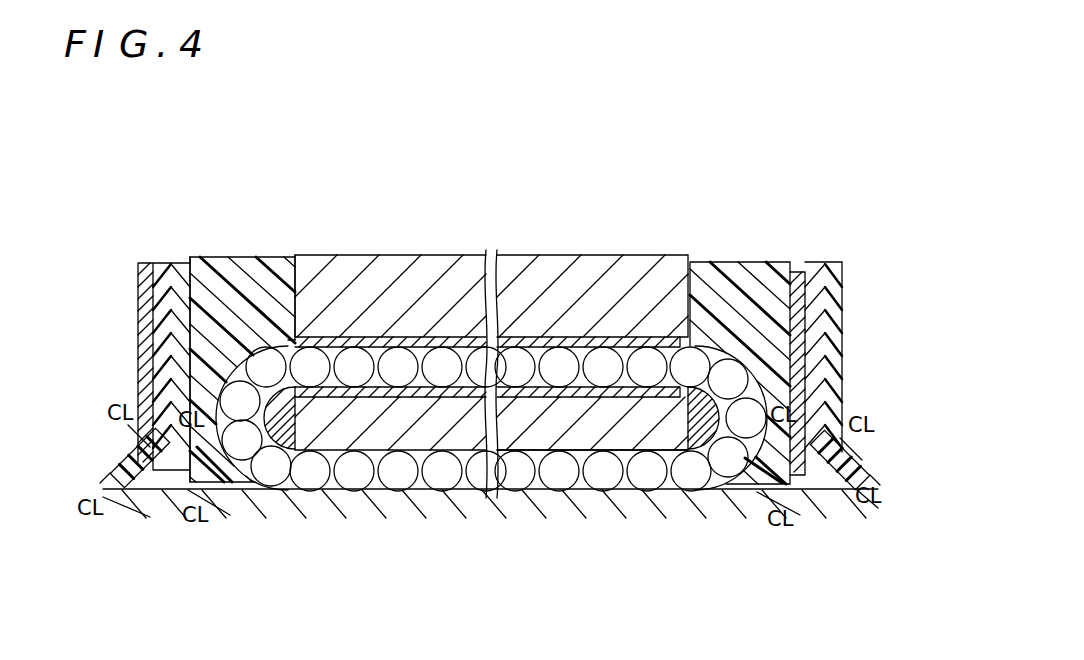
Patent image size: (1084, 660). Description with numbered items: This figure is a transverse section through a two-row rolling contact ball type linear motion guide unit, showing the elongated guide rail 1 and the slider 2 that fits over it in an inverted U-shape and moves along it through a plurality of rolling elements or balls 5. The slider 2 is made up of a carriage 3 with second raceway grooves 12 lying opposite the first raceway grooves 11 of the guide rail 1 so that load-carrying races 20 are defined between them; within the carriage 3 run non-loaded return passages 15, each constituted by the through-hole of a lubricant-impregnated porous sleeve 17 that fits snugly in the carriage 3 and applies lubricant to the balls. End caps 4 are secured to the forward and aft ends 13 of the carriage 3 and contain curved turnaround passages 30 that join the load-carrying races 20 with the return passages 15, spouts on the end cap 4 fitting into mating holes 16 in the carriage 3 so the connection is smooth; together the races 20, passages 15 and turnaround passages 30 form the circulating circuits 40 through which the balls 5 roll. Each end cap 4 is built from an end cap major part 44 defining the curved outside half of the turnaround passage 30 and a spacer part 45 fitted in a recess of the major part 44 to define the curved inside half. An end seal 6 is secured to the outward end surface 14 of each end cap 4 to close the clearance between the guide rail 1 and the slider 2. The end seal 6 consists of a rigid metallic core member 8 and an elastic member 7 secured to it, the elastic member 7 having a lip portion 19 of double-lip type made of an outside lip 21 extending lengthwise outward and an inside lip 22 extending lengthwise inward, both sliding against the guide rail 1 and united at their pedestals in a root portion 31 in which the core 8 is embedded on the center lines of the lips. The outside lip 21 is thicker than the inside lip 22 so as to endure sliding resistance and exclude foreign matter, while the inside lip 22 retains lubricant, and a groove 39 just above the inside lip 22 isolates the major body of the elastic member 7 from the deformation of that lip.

The guide rail 1 is at (312, 500).
The slider 2 is at (629, 252).
The carriage 3 is at (540, 427).
The end cap 4 is at (250, 130).
The rolling element (ball) 5 is at (443, 372).
The end seal 6 is at (187, 198).
The elastic member 7 is at (144, 300).
The core member 8 is at (170, 300).
The first raceway groove 11 is at (235, 490).
The second raceway groove 12 is at (350, 484).
The forward and aft ends of the carriage 13 is at (278, 280).
The outward end surface of the end cap 14 is at (200, 305).
The return passage 15 is at (617, 480).
The mating hole 16 is at (428, 343).
The sleeve 17 is at (365, 343).
The lip portion 19 is at (188, 560).
The load-carrying race 20 is at (328, 590).
The outside lip 21 is at (123, 490).
The inside lip 22 is at (181, 503).
The turnaround passage 30 is at (247, 370).
The root portion 31 is at (112, 470).
The groove 39 is at (213, 482).
The circulating circuit 40 is at (688, 590).
The end cap major part 44 is at (253, 283).
The spacer part 45 is at (306, 335).